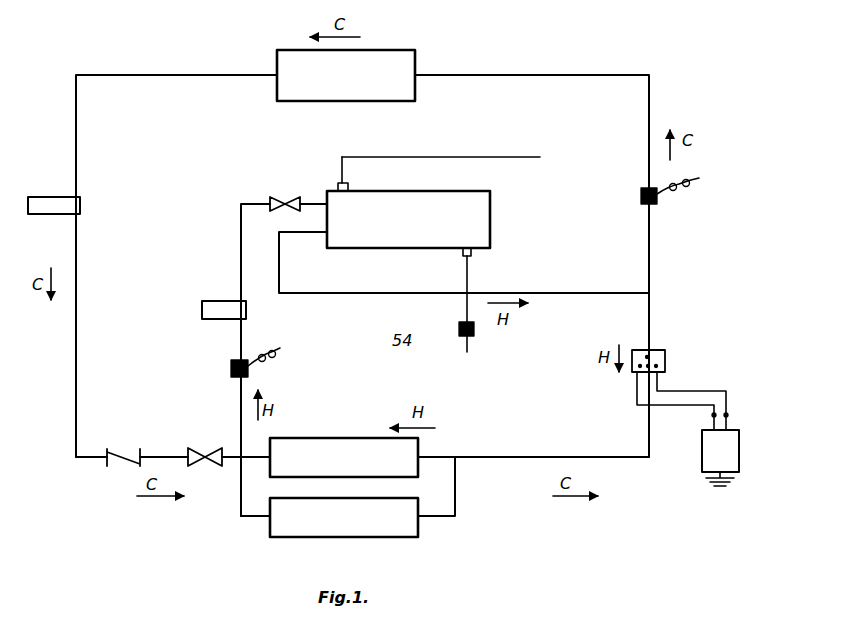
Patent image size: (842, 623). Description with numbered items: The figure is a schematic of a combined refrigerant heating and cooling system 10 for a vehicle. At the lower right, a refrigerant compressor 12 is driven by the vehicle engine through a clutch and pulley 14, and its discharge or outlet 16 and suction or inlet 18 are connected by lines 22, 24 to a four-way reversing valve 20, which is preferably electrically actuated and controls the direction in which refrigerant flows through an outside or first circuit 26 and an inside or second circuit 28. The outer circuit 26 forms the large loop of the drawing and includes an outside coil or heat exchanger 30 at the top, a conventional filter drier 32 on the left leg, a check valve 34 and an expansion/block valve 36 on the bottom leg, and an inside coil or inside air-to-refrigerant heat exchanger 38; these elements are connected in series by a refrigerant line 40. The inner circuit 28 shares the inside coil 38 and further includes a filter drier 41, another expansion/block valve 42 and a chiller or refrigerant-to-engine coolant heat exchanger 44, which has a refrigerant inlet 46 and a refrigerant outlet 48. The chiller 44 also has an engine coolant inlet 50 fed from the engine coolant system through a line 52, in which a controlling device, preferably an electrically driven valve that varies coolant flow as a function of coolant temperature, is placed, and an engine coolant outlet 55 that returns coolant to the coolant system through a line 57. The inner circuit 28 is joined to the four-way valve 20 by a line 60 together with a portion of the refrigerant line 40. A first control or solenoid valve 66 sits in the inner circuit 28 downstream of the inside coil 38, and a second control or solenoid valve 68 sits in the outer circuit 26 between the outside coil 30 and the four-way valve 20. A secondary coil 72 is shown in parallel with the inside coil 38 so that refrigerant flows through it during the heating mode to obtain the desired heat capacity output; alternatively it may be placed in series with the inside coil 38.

The combined refrigerant heating and cooling system 10 is at (658, 48).
The refrigerant compressor 12 is at (790, 410).
The clutch and pulley 14 is at (748, 480).
The discharge or outlet 16 is at (712, 426).
The suction or inlet 18 is at (726, 412).
The four-way reversing valve 20 is at (660, 350).
The line 22 is at (636, 389).
The line 24 is at (660, 384).
The outside or first circuit 26 is at (130, 70).
The inside or second circuit 28 is at (252, 198).
The outside coil or heat exchanger 30 is at (400, 38).
The filter drier 32 is at (42, 208).
The check valve 34 is at (120, 452).
The valve 36 is at (200, 450).
The inside coil or inside air-to-refrigerant heat exchanger 38 is at (364, 438).
The refrigerant line 40 is at (548, 50).
The filter drier 41 is at (216, 302).
The expansion/block valve 42 is at (292, 168).
The chiller or refrigerant-to-engine coolant heat exchanger 44 is at (490, 210).
The refrigerant inlet 46 is at (327, 192).
The refrigerant outlet 48 is at (316, 234).
The engine coolant inlet 50 is at (472, 256).
The line 52 is at (467, 352).
The engine coolant outlet 55 is at (350, 188).
The line 57 is at (484, 138).
The line 60 is at (572, 292).
The first control or solenoid valve 66 is at (232, 364).
The second control or solenoid valve 68 is at (643, 190).
The secondary coil 72 is at (340, 522).